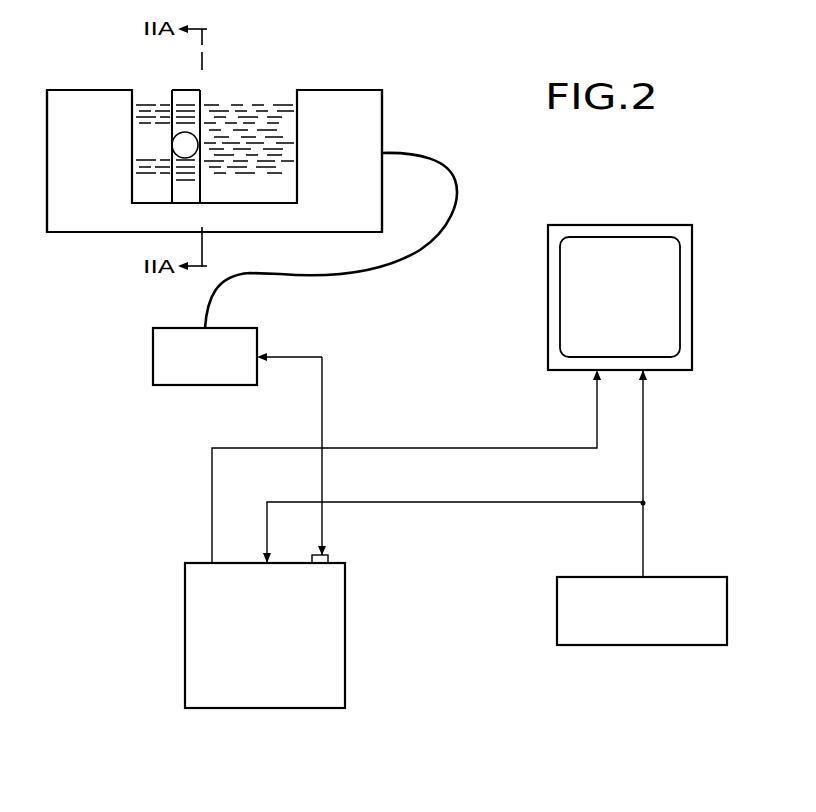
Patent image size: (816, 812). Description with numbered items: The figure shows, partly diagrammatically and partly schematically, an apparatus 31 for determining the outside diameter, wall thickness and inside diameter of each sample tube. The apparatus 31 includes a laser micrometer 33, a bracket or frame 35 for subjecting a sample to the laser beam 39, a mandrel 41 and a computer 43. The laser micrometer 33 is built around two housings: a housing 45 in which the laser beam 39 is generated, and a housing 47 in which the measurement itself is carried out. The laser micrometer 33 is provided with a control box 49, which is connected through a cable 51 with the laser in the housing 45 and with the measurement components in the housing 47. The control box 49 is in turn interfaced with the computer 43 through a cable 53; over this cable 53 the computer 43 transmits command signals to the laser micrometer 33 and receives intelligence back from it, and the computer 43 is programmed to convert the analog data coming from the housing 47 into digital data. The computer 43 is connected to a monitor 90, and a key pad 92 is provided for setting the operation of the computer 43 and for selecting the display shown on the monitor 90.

The apparatus 31 is at (437, 363).
The laser micrometer 33 is at (336, 84).
The bracket or frame 35 is at (193, 98).
The laser beam 39 is at (147, 92).
The mandrel 41 is at (182, 147).
The computer 43 is at (195, 627).
The housing 45 is at (368, 118).
The housing 47 is at (56, 210).
The control box 49 is at (160, 357).
The cable 51 is at (457, 193).
The cable 53 is at (323, 410).
The monitor 90 is at (641, 247).
The key pad 92 is at (692, 590).